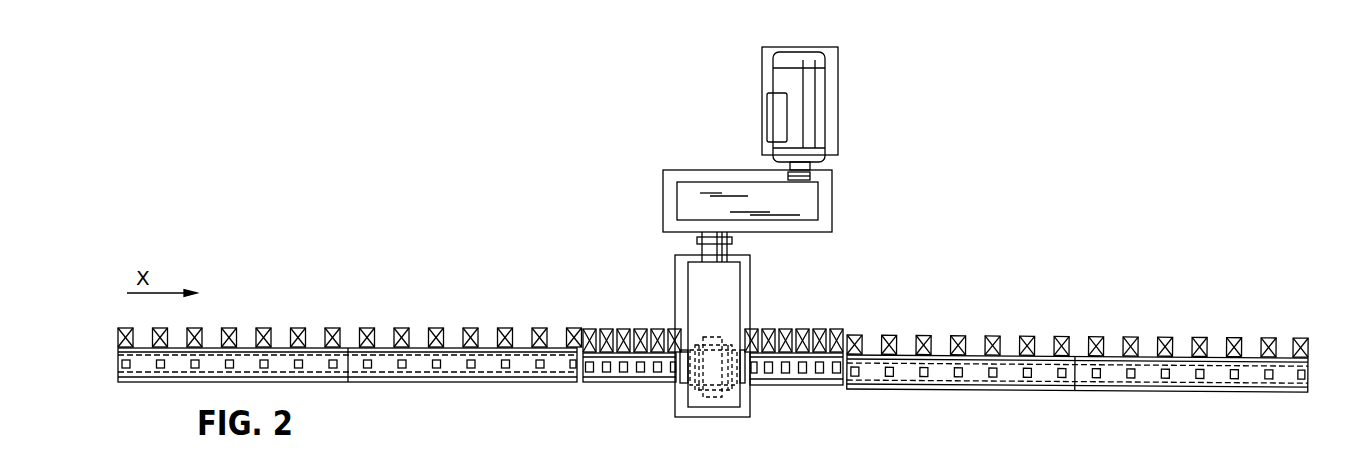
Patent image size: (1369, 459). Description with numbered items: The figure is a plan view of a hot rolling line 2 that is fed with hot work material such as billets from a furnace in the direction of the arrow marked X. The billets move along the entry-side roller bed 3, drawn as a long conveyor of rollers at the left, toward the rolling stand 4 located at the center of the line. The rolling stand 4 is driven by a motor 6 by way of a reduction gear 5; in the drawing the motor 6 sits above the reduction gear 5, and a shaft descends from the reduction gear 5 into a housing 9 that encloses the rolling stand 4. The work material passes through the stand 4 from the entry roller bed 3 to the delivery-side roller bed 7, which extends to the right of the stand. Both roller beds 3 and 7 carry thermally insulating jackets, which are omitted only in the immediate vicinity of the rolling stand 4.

The hot rolling line 2 is at (925, 262).
The roller bed 3 is at (268, 365).
The rolling stand 4 is at (715, 345).
The reduction gear 5 is at (693, 185).
The motor 6 is at (818, 107).
The roller bed 7 is at (1043, 368).
The housing 9 is at (698, 278).